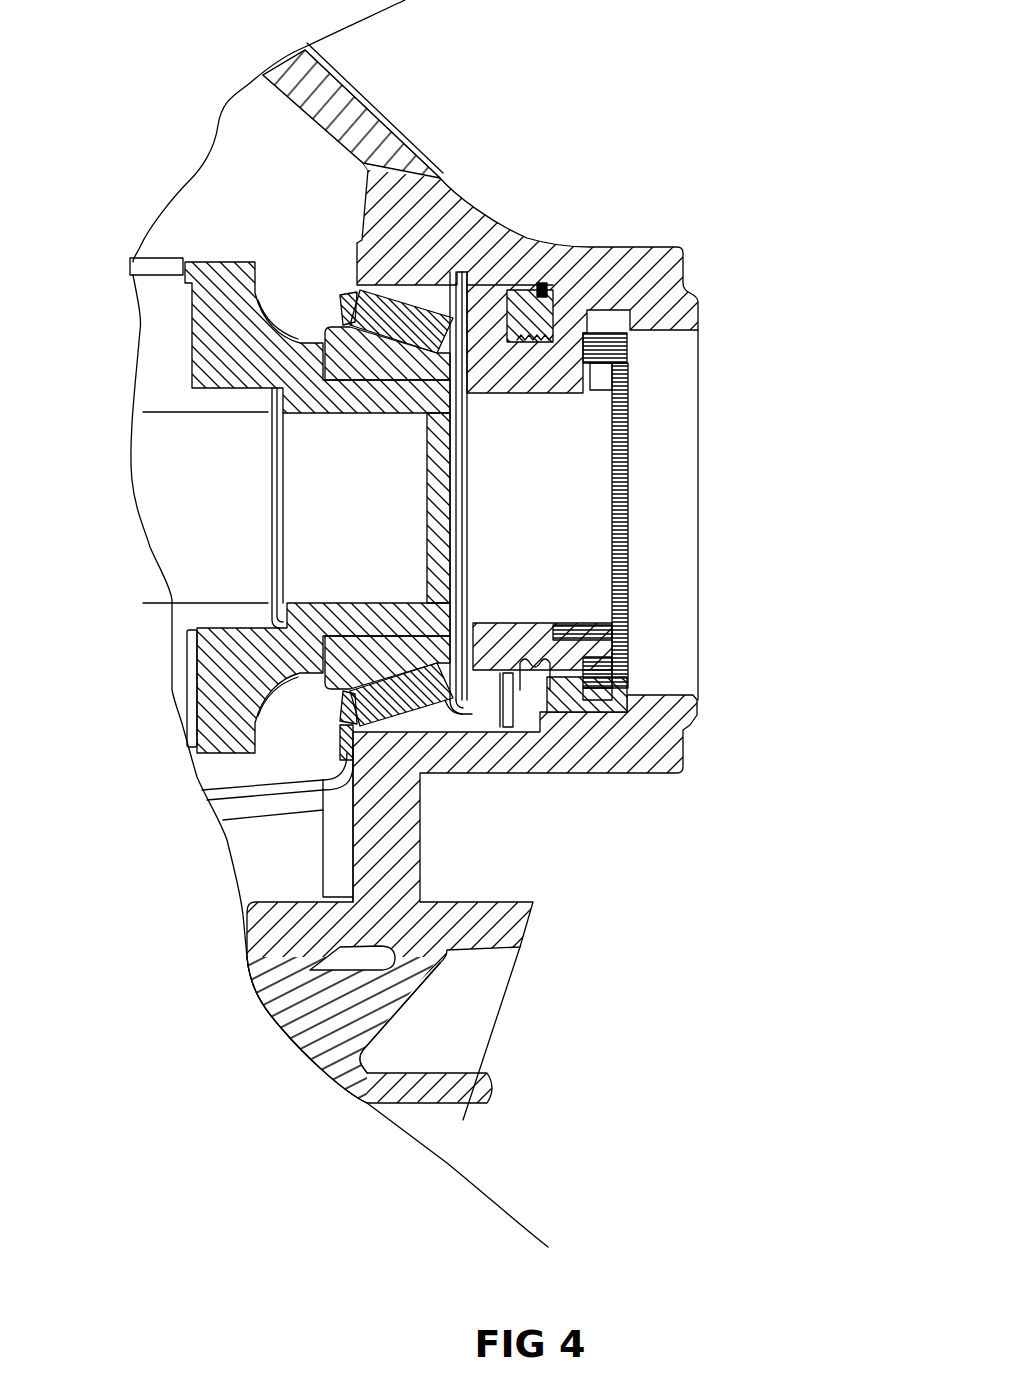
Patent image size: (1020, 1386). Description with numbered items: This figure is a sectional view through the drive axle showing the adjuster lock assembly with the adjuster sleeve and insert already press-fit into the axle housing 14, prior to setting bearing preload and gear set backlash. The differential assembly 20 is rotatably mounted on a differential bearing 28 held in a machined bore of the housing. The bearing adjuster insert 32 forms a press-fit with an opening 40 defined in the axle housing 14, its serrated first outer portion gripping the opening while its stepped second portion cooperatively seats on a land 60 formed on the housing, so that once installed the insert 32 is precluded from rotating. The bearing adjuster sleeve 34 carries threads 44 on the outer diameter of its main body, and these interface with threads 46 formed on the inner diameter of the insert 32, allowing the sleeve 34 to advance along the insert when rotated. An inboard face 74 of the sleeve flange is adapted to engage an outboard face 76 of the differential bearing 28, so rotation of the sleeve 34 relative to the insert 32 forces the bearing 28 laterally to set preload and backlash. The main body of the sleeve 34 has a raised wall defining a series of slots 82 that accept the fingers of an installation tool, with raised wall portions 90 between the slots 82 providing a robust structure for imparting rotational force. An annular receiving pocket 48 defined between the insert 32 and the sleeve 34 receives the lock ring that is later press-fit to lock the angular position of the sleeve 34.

The axle housing 14 is at (423, 200).
The differential assembly 20 is at (230, 240).
The differential bearing 28 is at (345, 352).
The bearing adjuster insert 32 is at (590, 317).
The bearing adjuster sleeve 34 is at (620, 627).
The opening 40 is at (623, 325).
The threads 44 is at (540, 697).
The threads 46 is at (545, 705).
The annular receiving pocket 48 is at (657, 682).
The land 60 is at (540, 292).
The inboard face 74 is at (457, 727).
The outboard face 76 is at (462, 702).
The slots 82 is at (600, 377).
The raised wall portions 90 is at (628, 643).